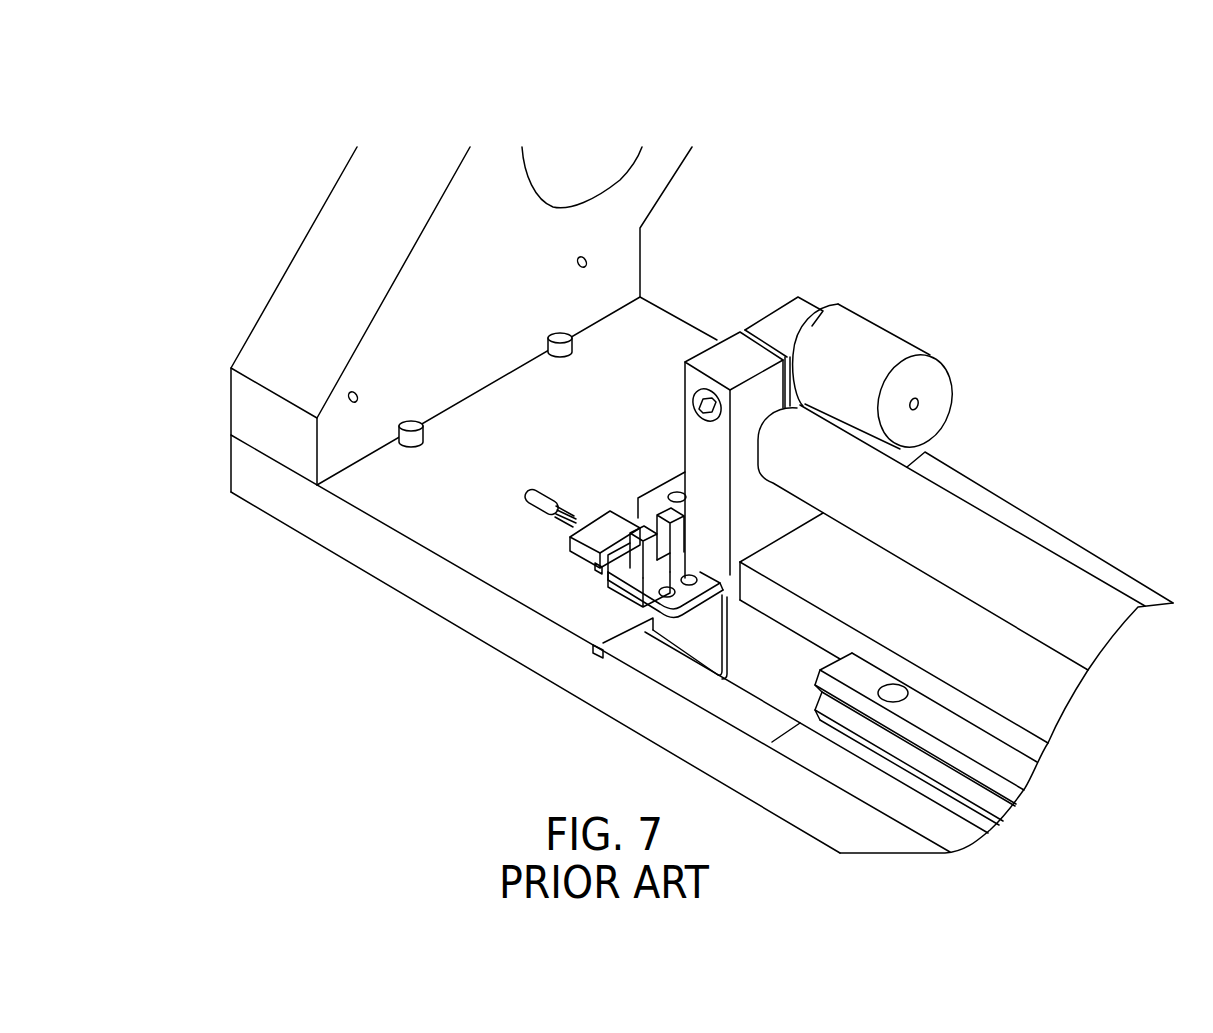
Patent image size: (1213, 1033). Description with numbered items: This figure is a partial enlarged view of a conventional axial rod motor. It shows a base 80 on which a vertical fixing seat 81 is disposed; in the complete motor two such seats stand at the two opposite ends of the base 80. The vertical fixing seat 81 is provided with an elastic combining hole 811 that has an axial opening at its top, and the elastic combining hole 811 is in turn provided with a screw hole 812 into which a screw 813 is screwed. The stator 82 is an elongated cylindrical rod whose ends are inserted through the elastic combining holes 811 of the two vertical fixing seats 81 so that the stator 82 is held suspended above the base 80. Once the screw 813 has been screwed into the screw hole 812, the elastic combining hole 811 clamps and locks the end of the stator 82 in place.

The base 80 is at (483, 620).
The vertical fixing seat 81 is at (697, 447).
The stator 82 is at (997, 527).
The elastic combining hole 811 is at (778, 428).
The screw hole 812 is at (712, 392).
The screw 813 is at (682, 400).